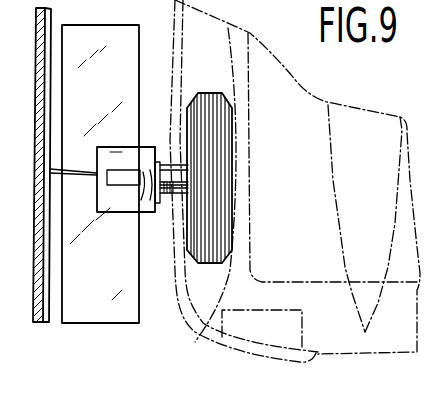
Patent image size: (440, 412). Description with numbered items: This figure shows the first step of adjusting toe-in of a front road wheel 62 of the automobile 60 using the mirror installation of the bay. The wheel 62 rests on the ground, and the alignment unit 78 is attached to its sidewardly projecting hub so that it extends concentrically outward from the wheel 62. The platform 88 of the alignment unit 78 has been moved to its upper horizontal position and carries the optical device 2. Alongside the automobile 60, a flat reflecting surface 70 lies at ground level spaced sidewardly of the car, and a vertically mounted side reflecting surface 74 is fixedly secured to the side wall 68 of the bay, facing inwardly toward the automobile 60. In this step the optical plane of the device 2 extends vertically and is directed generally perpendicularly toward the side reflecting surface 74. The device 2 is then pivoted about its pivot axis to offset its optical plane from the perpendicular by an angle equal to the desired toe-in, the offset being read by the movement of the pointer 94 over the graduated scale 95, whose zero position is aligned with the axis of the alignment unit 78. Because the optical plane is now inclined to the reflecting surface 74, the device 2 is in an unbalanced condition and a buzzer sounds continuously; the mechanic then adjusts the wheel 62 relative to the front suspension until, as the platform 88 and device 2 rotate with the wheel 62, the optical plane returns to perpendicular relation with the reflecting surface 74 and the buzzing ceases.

The optical device 2 is at (106, 186).
The automobile 60 is at (196, 344).
The front road wheel 62 is at (217, 128).
The side wall 68 is at (40, 323).
The reflecting surface 70 is at (114, 38).
The side reflecting surface 74 is at (53, 24).
The alignment unit 78 is at (152, 132).
The platform 88 is at (108, 205).
The pointer 94 is at (141, 180).
The graduated scale 95 is at (158, 206).